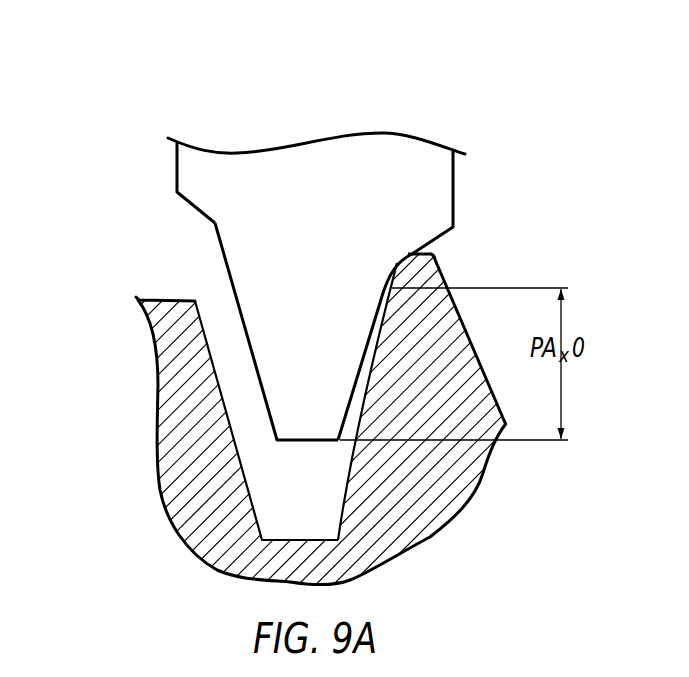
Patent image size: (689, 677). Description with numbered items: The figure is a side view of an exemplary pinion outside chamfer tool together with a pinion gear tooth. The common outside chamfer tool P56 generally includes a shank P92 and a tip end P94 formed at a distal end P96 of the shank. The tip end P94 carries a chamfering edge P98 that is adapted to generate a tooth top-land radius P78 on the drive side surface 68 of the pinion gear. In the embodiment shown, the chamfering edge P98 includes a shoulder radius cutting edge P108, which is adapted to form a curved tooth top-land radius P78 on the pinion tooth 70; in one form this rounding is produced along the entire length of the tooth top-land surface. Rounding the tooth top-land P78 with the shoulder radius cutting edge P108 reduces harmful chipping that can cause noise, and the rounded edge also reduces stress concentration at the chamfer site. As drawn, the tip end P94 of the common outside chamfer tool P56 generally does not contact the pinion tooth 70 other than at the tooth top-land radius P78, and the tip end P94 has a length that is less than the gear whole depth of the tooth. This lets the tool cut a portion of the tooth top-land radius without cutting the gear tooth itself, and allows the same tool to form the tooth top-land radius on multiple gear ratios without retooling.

The common outside chamfer tool P56 is at (266, 234).
The shank P92 is at (177, 155).
The distal end P96 is at (176, 192).
The tip end P94 is at (257, 388).
The chamfering edge P98 is at (388, 251).
The shoulder radius cutting edge P108 is at (390, 267).
The tooth top-land radius P78 is at (403, 267).
The drive side surface 68 is at (362, 417).
The pinion tooth 70 is at (463, 524).